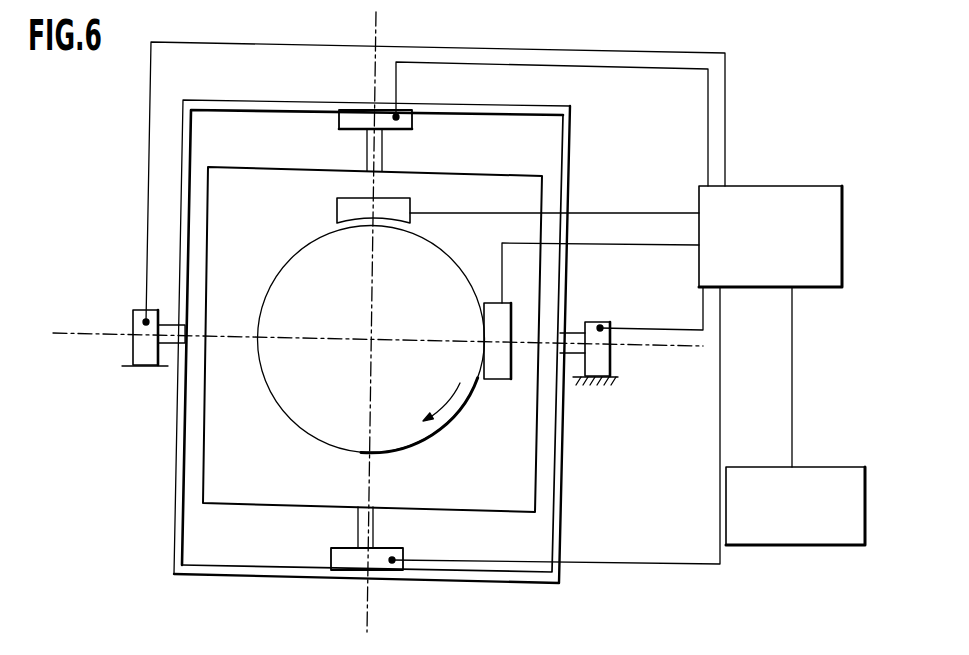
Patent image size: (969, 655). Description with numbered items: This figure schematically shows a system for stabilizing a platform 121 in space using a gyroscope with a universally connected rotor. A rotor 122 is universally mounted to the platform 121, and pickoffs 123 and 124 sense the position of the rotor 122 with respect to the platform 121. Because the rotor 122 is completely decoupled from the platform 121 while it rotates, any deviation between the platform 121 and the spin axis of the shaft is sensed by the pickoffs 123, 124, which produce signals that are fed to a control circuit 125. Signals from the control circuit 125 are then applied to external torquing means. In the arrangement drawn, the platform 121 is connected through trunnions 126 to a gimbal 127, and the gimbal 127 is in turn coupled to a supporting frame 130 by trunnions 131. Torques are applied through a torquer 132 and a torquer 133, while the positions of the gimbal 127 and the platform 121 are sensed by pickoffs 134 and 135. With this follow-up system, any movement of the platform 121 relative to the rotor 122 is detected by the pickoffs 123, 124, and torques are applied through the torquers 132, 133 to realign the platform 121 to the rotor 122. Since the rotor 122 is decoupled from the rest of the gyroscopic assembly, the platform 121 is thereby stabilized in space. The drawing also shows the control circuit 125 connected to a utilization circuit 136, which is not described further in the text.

The platform 121 is at (304, 474).
The rotor 122 is at (330, 378).
The pickoff 123 is at (337, 213).
The pickoff 124 is at (497, 379).
The control circuit 125 is at (803, 185).
The trunnions 126 is at (382, 147).
The gimbal 127 is at (490, 103).
The supporting frame 130 is at (136, 370).
The trunnions 131 is at (172, 344).
The torquer 132 is at (340, 118).
The torquer 133 is at (133, 330).
The pickoff 134 is at (331, 561).
The pickoff 135 is at (613, 355).
The utilization circuit 136 is at (842, 466).